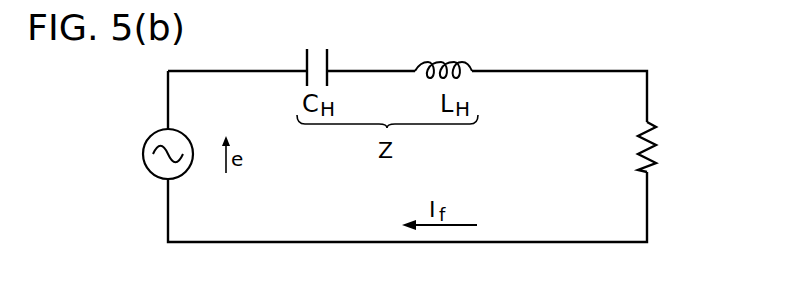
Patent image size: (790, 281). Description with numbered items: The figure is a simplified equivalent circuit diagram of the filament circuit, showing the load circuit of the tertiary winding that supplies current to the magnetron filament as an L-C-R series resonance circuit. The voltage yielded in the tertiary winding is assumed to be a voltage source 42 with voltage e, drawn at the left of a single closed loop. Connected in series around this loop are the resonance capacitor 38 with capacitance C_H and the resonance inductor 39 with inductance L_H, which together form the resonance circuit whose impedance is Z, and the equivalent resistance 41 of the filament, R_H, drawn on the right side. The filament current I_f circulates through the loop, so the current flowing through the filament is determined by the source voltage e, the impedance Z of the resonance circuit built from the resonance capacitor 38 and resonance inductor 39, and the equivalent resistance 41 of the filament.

The resonance capacitor 38 is at (309, 53).
The resonance inductor 39 is at (442, 58).
The equivalent resistance 41 is at (652, 151).
The voltage source 42 is at (179, 136).